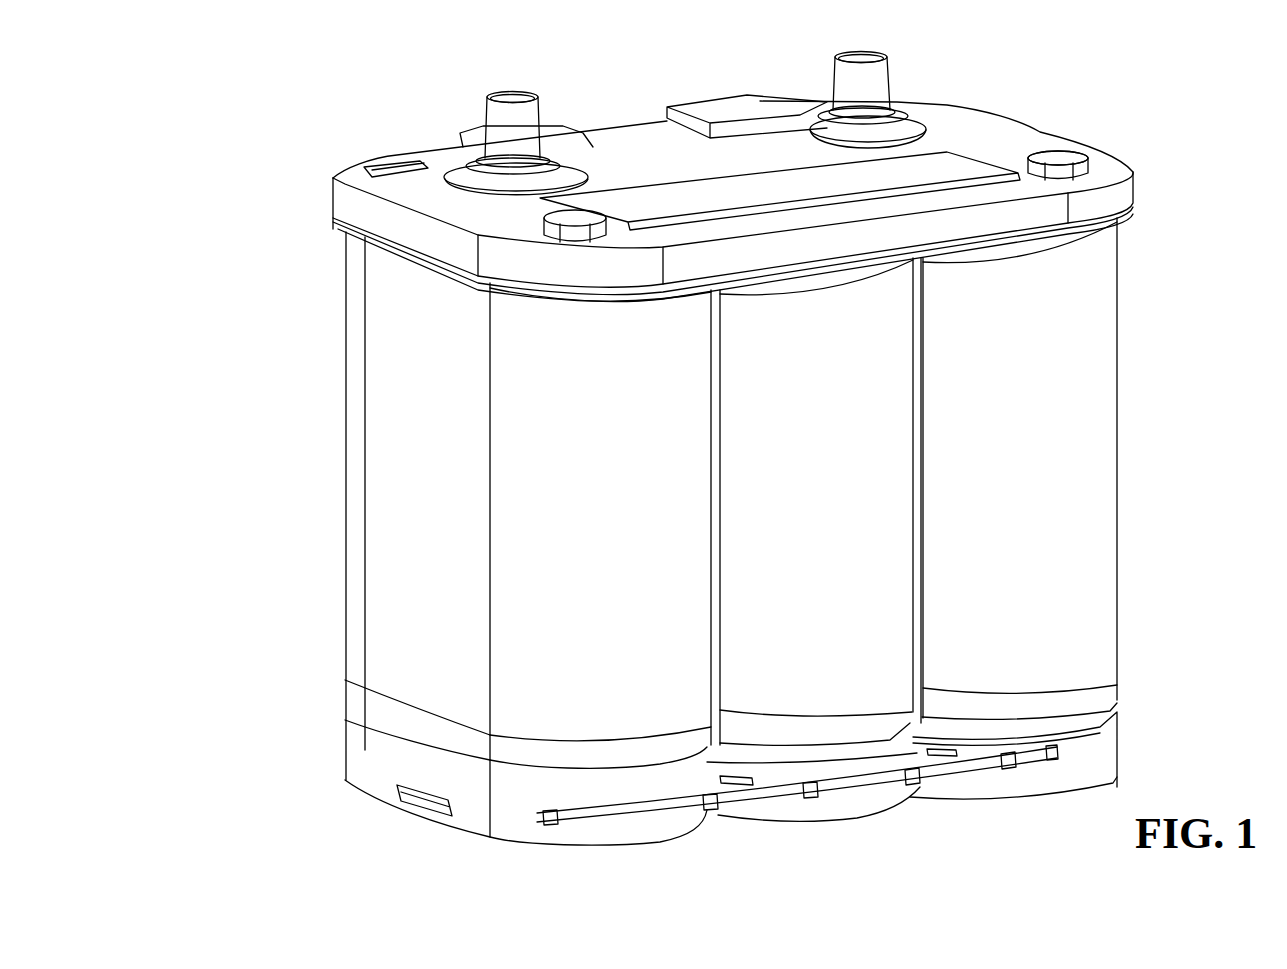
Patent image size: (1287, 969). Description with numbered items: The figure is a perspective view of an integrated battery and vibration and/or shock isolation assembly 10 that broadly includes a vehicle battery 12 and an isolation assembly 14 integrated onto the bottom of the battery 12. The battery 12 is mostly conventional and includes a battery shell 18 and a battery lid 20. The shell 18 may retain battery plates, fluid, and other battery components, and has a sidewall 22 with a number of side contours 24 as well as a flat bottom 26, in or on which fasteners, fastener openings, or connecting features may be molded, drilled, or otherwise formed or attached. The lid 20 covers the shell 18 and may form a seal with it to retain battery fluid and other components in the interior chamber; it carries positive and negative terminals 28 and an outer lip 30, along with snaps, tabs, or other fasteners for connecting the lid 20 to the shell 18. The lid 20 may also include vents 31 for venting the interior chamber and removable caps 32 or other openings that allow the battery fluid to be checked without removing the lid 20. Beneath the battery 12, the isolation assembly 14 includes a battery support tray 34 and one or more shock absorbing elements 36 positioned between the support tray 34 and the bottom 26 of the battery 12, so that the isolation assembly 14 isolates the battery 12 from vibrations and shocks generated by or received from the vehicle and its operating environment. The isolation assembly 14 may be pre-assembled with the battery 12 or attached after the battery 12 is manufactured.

The integrated battery and vibration and/or shock isolation assembly 10 is at (264, 720).
The vehicle battery 12 is at (308, 379).
The isolation assembly 14 is at (333, 708).
The battery shell 18 is at (402, 481).
The battery lid 20 is at (354, 160).
The sidewall 22 is at (378, 572).
The side contours 24 is at (934, 480).
The flat bottom 26 is at (1134, 699).
The positive and negative terminals 28 is at (491, 115).
The outer lip 30 is at (340, 206).
The vents 31 is at (578, 210).
The removable caps 32 is at (1062, 152).
The battery support tray 34 is at (359, 767).
The shock absorbing elements 36 is at (557, 783).